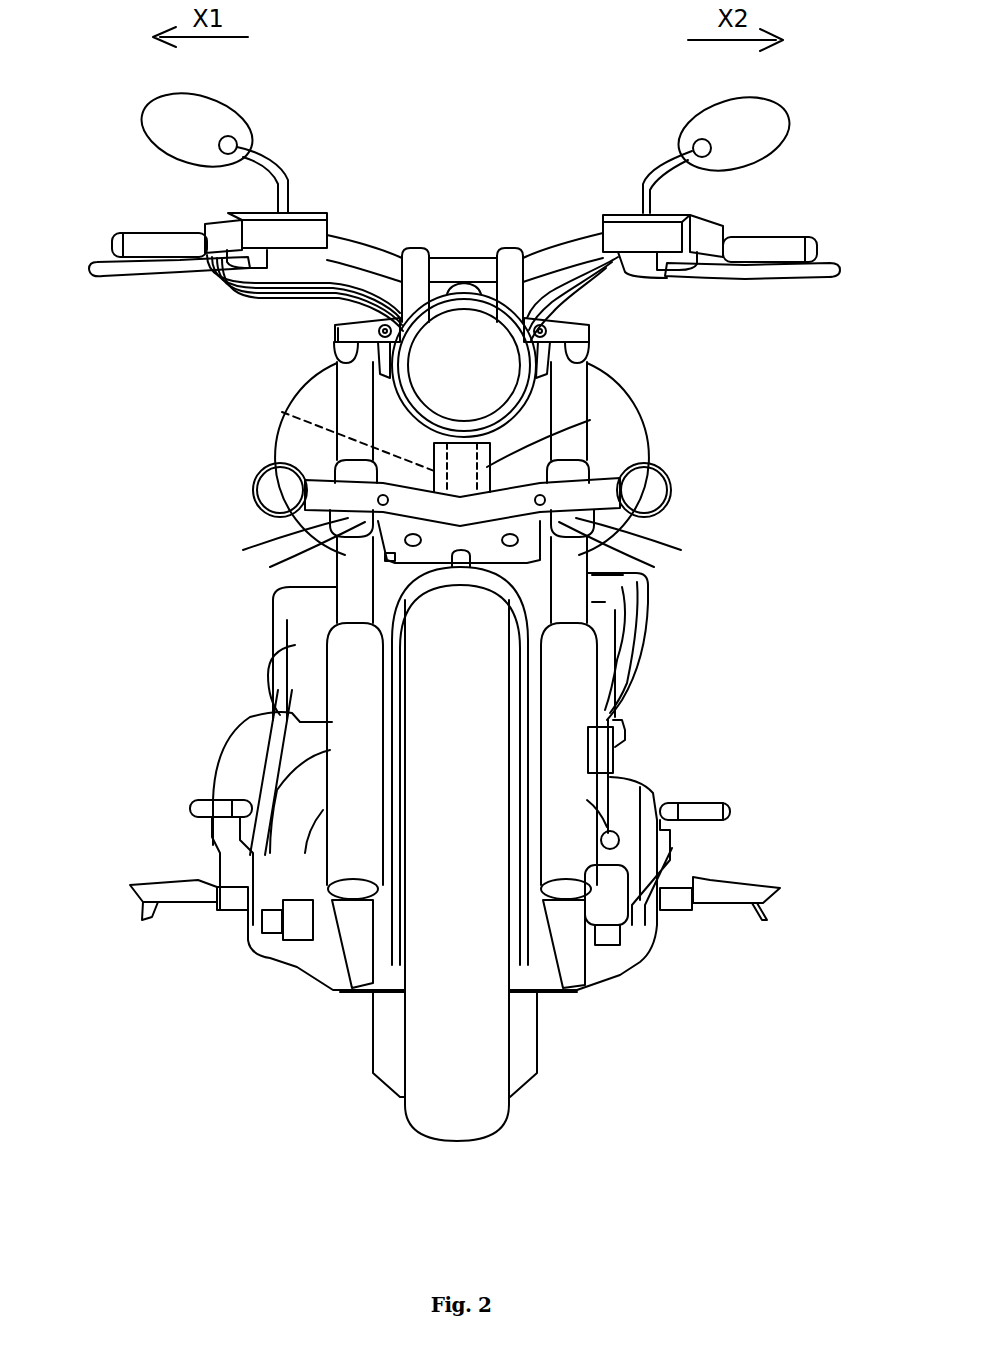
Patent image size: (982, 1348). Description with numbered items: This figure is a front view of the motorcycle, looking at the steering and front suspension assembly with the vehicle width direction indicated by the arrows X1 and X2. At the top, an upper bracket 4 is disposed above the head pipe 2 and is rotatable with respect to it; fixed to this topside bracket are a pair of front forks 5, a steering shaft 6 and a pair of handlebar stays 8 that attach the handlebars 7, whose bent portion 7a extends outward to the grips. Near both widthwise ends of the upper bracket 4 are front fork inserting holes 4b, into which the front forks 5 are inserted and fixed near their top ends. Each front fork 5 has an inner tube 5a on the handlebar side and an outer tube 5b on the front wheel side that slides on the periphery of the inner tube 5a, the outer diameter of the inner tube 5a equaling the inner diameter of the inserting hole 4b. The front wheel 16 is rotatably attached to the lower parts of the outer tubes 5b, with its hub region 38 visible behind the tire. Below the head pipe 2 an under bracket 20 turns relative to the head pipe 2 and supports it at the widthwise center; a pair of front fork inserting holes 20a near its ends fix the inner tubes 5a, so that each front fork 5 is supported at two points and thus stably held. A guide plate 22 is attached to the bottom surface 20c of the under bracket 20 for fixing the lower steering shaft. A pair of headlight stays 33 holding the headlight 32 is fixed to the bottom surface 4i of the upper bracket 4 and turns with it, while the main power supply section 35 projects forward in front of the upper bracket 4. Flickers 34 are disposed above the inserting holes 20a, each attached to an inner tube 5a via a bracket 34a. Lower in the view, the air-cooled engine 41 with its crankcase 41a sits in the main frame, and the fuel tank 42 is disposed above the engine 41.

The head pipe 2 is at (560, 433).
The upper bracket 4 is at (593, 333).
The front fork inserting hole 4b is at (333, 363).
The bottom surface 4i is at (337, 352).
The front fork 5 is at (353, 650).
The inner tube 5a is at (350, 600).
The outer tube 5b is at (353, 698).
The steering shaft 6 is at (347, 433).
The handlebar 7 is at (469, 229).
The handlebar bent portion 7a is at (547, 258).
The handlebar stay 8 is at (414, 255).
The front wheel 16 is at (490, 1112).
The under bracket 20 is at (595, 503).
The front fork inserting hole 20a is at (332, 512).
The bottom surface 20c is at (352, 596).
The guide plate 22 is at (490, 557).
The headlight 32 is at (507, 390).
The headlight stay 33 is at (380, 333).
The flicker 34 is at (267, 492).
The bracket 34a is at (345, 473).
The main power supply section 35 is at (462, 290).
The front wheel hub 38 is at (517, 1038).
The engine 41 is at (662, 783).
The crankcase 41a is at (627, 832).
The fuel tank 42 is at (312, 395).